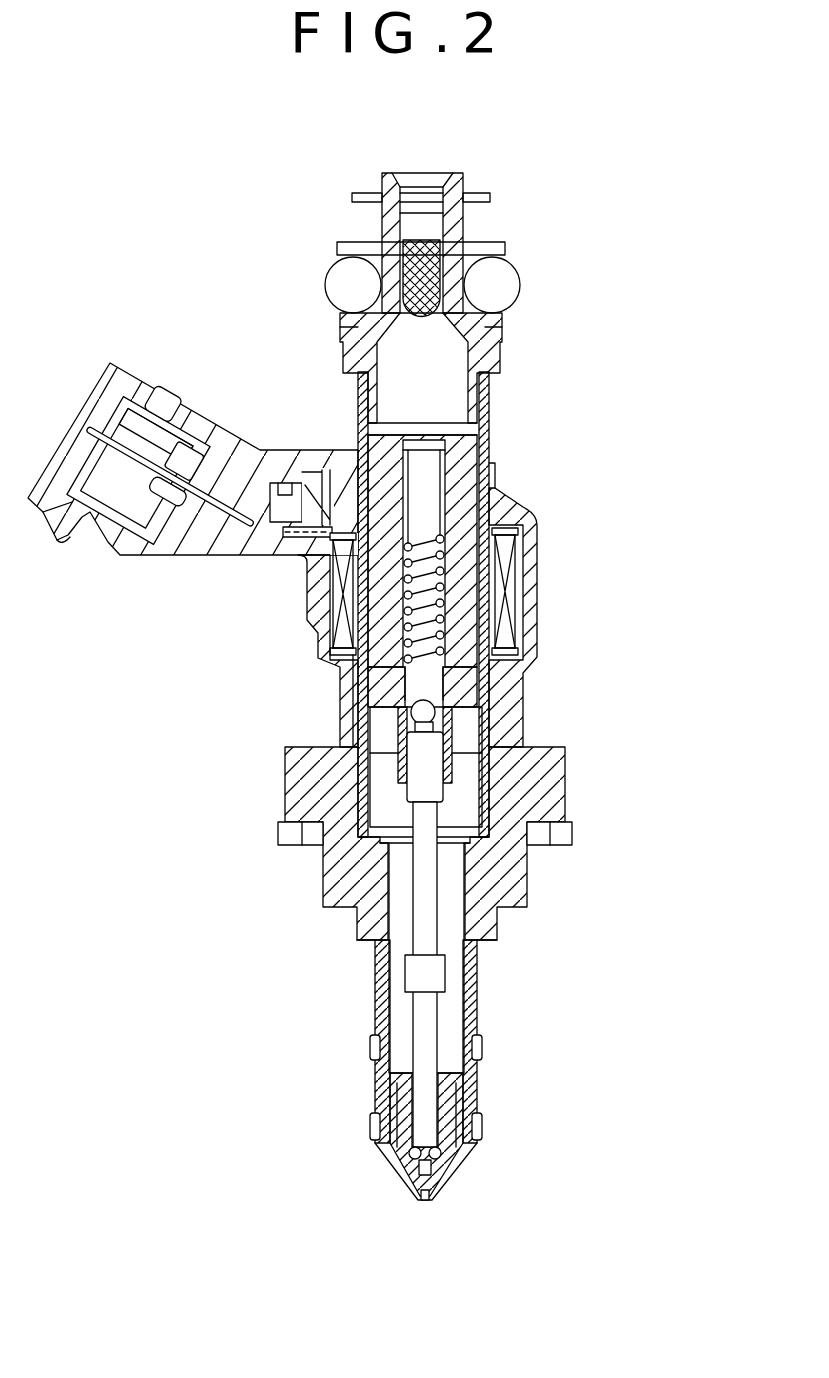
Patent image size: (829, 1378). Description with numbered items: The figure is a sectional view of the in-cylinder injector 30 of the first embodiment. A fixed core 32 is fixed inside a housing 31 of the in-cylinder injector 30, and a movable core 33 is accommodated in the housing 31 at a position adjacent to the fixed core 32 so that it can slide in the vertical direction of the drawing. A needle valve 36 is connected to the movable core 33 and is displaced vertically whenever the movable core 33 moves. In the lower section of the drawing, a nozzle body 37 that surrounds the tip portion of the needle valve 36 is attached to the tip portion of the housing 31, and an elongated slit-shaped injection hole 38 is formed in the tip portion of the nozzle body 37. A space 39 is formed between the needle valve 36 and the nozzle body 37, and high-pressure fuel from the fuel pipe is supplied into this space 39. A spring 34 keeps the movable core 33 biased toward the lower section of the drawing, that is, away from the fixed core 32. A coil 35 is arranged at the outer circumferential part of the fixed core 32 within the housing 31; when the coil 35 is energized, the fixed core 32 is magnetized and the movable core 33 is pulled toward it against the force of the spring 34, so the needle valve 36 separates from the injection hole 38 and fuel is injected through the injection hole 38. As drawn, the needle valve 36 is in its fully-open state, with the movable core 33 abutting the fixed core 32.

The in-cylinder injector 30 is at (553, 493).
The housing 31 is at (567, 787).
The fixed core 32 is at (462, 463).
The movable core 33 is at (470, 683).
The spring 34 is at (413, 678).
The coil 35 is at (337, 600).
The needle valve 36 is at (427, 1033).
The nozzle body 37 is at (450, 1198).
The injection hole 38 is at (423, 1203).
The space 39 is at (412, 1165).